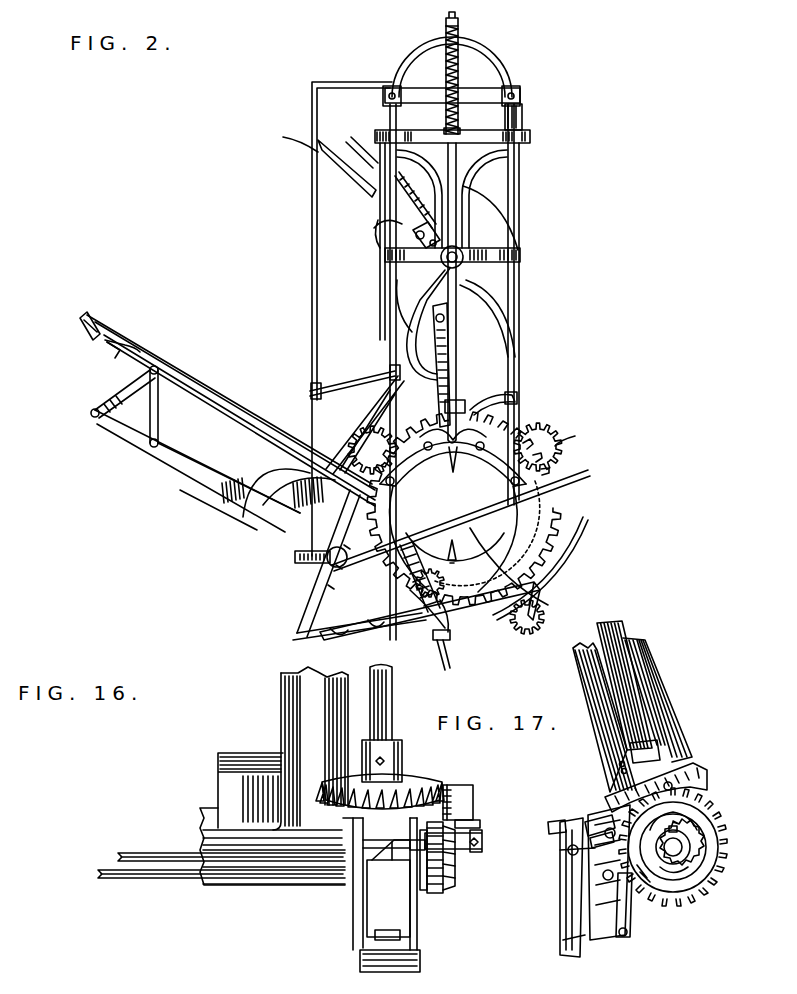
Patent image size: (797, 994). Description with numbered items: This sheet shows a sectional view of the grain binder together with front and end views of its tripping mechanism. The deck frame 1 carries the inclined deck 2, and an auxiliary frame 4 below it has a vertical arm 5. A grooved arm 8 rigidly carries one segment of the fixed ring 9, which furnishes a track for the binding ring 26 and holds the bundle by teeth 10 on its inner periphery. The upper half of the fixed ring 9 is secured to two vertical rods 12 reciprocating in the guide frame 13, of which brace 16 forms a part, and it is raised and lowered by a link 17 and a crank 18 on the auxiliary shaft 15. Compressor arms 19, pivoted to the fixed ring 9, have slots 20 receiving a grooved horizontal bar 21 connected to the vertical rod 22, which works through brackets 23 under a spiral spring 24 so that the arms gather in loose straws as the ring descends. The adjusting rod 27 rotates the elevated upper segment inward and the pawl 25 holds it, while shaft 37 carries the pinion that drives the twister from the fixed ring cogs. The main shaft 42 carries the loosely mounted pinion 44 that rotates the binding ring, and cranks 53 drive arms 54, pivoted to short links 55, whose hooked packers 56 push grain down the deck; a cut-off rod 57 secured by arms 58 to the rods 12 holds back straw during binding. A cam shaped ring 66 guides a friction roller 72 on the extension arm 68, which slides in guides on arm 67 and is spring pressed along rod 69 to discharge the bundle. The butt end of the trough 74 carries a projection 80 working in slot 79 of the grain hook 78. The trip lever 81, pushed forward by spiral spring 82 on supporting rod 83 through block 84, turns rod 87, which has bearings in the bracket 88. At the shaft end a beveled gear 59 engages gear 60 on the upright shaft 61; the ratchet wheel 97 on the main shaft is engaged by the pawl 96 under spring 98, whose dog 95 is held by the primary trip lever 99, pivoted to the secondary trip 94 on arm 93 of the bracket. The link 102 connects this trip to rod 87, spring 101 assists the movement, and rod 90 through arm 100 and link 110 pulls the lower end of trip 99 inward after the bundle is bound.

In FIG. 2, the deck frame 1 is at (118, 348).
In FIG. 2, the inclined deck 2 is at (202, 388).
In FIG. 16, the auxiliary frame 4 is at (274, 887).
In FIG. 2, the vertical arm 5 is at (372, 416).
In FIG. 16, the vertical arm 5 is at (280, 716).
In FIG. 17, the vertical arm 5 is at (663, 693).
In FIG. 2, the grooved arm 8 is at (457, 624).
In FIG. 2, the fixed ring 9 is at (545, 508).
In FIG. 2, the teeth 10 is at (452, 552).
In FIG. 2, the vertical rods 12 is at (520, 174).
In FIG. 2, the guide frame 13 is at (521, 257).
In FIG. 2, the auxiliary shaft 15 is at (458, 266).
In FIG. 2, the brace 16 is at (478, 41).
In FIG. 2, the link 17 is at (446, 358).
In FIG. 2, the crank 18 is at (468, 363).
In FIG. 2, the compressor arms 19 is at (525, 552).
In FIG. 2, the slot 20 is at (453, 510).
In FIG. 2, the grooved horizontal bar 21 is at (459, 522).
In FIG. 2, the vertical rod 22 is at (457, 329).
In FIG. 2, the brackets 23 is at (458, 136).
In FIG. 2, the spiral spring 24 is at (445, 45).
In FIG. 2, the pawl 25 is at (502, 406).
In FIG. 2, the binding ring 26 is at (522, 452).
In FIG. 2, the adjusting rod 27 is at (378, 240).
In FIG. 2, the shaft 37 is at (392, 438).
In FIG. 17, the main shaft 42 is at (683, 845).
In FIG. 2, the pinion 44 is at (333, 580).
In FIG. 2, the cranks 53 is at (294, 555).
In FIG. 2, the arms 54 is at (227, 450).
In FIG. 2, the short link 55 is at (147, 403).
In FIG. 2, the hooked packers 56 is at (264, 447).
In FIG. 2, the cut-off rod 57 is at (310, 247).
In FIG. 2, the arms 58 is at (356, 382).
In FIG. 16, the beveled gear 59 is at (441, 896).
In FIG. 17, the beveled gear 59 is at (712, 897).
In FIG. 16, the beveled gear 60 is at (414, 779).
In FIG. 17, the beveled gear 60 is at (700, 766).
In FIG. 16, the upright shaft 61 is at (396, 702).
In FIG. 17, the upright shaft 61 is at (623, 664).
In FIG. 2, the cam shaped ring 66 is at (500, 213).
In FIG. 2, the arm 67 is at (458, 192).
In FIG. 2, the extension arm 68 is at (358, 184).
In FIG. 2, the rod 69 is at (351, 140).
In FIG. 2, the friction roller 72 is at (430, 200).
In FIG. 2, the butt end of grain trough 74 is at (560, 592).
In FIG. 2, the grain hook 78 is at (545, 612).
In FIG. 2, the slot 79 is at (460, 634).
In FIG. 2, the projection 80 is at (428, 625).
In FIG. 2, the trip lever 81 is at (580, 432).
In FIG. 2, the spiral spring 82 is at (418, 545).
In FIG. 2, the supporting rod 83 is at (452, 658).
In FIG. 2, the block 84 is at (438, 662).
In FIG. 2, the rod 87 is at (380, 593).
In FIG. 16, the rod 87 is at (182, 876).
In FIG. 17, the rod 87 is at (575, 915).
In FIG. 16, the bracket 88 is at (367, 900).
In FIG. 17, the bracket 88 is at (598, 920).
In FIG. 16, the rod 90 is at (155, 852).
In FIG. 17, the rod 90 is at (583, 840).
In FIG. 16, the arm 93 is at (597, 850).
In FIG. 16, the secondary trip 94 is at (465, 820).
In FIG. 17, the secondary trip 94 is at (555, 820).
In FIG. 16, the dog 95 is at (460, 810).
In FIG. 17, the dog 95 is at (607, 825).
In FIG. 16, the pawl 96 is at (447, 887).
In FIG. 17, the pawl 96 is at (716, 838).
In FIG. 16, the ratchet wheel 97 is at (477, 836).
In FIG. 17, the ratchet wheel 97 is at (713, 851).
In FIG. 17, the spring 98 is at (636, 895).
In FIG. 16, the primary trip lever 99 is at (340, 815).
In FIG. 17, the primary trip lever 99 is at (582, 817).
In FIG. 17, the arm 100 is at (635, 922).
In FIG. 16, the spring 101 is at (387, 942).
In FIG. 16, the link 102 is at (352, 888).
In FIG. 17, the link 102 is at (640, 778).
In FIG. 17, the link 110 is at (681, 884).